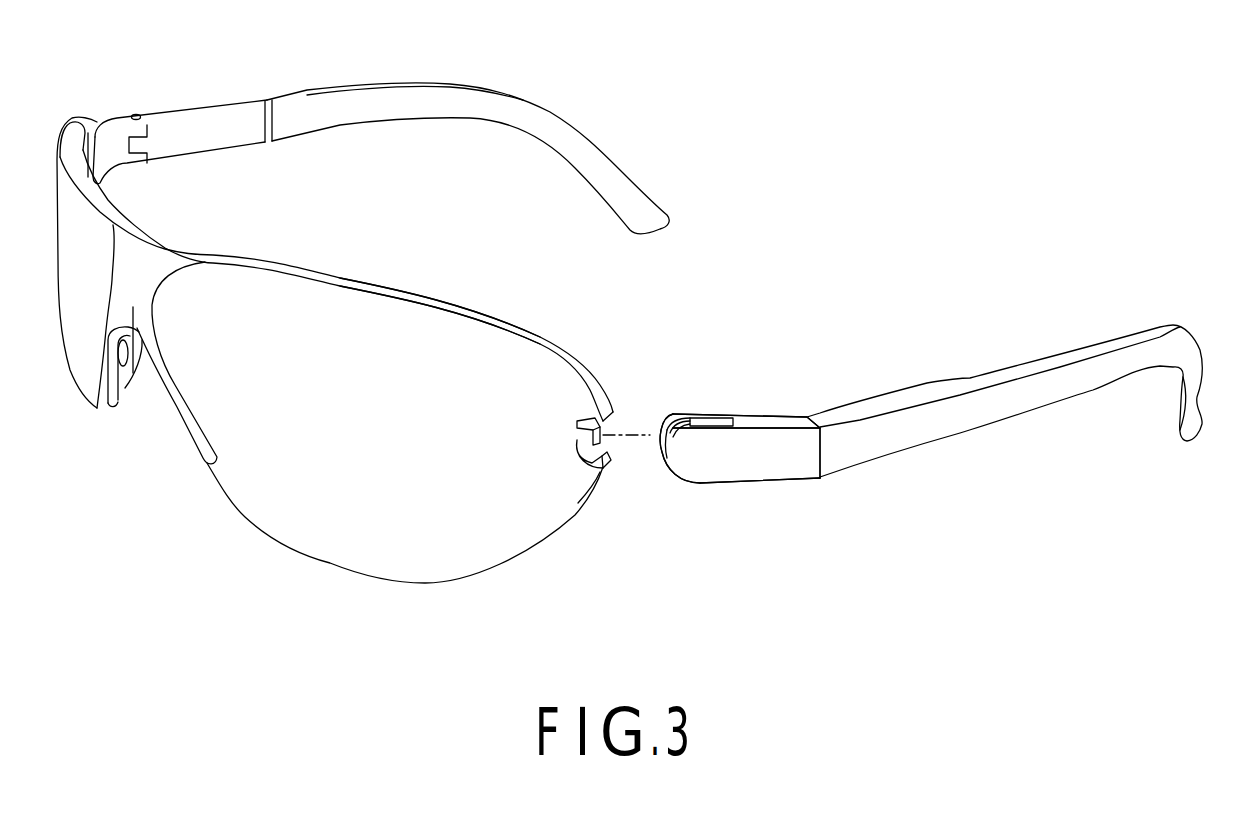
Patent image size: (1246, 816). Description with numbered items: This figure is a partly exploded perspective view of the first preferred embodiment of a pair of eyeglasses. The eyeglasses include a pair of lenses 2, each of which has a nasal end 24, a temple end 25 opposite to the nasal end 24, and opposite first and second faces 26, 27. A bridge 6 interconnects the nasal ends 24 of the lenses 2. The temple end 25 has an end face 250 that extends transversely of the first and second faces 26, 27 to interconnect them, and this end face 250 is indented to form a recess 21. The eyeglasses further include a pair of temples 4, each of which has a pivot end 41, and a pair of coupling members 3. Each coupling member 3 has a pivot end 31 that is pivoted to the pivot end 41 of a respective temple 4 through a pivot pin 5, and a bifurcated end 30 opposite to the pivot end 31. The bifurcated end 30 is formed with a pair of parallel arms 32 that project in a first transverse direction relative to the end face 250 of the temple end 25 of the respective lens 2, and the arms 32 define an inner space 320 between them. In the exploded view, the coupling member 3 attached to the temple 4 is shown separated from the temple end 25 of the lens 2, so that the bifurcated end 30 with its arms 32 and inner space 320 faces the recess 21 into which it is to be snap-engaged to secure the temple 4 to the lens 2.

The lens 2 is at (277, 513).
The coupling member 3 is at (112, 119).
The temple 4 is at (305, 112).
The pivot pin 5 is at (141, 115).
The bridge 6 is at (140, 392).
The recess 21 is at (606, 427).
The nasal end 24 is at (197, 277).
The temple end 25 is at (592, 405).
The first face 26 is at (294, 314).
The second face 27 is at (412, 297).
The bifurcated end 30 is at (725, 480).
The pivot end 31 is at (780, 445).
The arm 32 is at (680, 455).
The pivot end 41 is at (838, 455).
The end face 250 is at (602, 463).
The inner space 320 is at (680, 420).